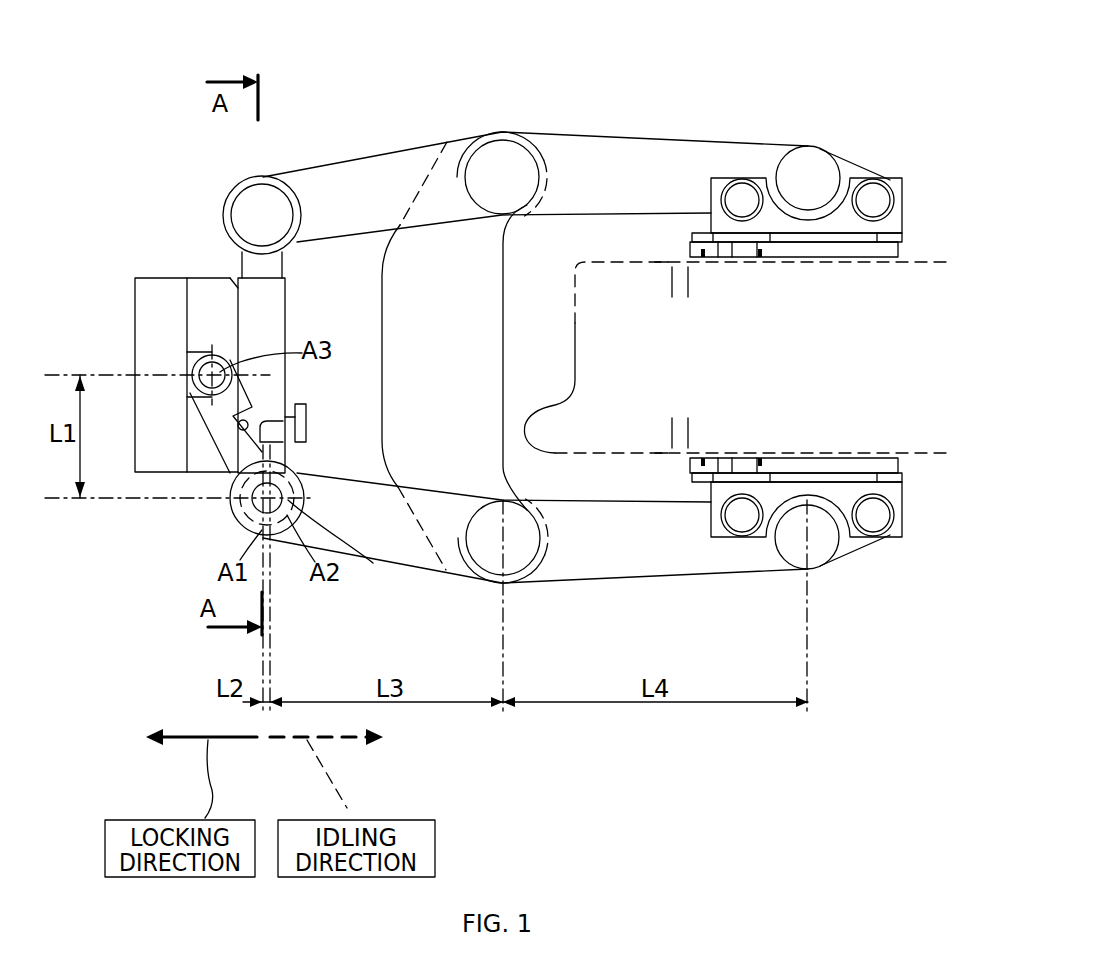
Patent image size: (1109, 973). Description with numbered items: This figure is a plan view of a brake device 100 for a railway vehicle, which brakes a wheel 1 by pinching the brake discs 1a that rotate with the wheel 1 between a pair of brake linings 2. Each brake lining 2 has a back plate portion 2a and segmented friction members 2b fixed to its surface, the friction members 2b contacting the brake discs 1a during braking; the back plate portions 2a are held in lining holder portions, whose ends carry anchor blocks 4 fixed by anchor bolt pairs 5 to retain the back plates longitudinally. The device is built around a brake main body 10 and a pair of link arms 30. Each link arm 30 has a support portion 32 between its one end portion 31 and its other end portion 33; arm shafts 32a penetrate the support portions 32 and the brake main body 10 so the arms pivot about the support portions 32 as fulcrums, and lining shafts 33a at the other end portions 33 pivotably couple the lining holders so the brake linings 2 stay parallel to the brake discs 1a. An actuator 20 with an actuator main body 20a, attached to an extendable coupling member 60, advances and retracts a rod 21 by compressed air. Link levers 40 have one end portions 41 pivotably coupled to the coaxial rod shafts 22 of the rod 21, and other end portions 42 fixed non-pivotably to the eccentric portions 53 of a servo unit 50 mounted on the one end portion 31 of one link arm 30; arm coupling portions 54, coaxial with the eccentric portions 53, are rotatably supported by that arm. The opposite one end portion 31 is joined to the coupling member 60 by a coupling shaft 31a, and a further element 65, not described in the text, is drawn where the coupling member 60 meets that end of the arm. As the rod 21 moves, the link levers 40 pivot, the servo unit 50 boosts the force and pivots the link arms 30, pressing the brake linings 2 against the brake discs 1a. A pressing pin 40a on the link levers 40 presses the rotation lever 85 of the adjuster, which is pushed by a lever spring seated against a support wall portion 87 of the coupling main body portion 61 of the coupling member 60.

The brake device 100 is at (914, 88).
The wheel 1 is at (922, 303).
The brake discs 1a is at (928, 260).
The brake linings 2 is at (857, 270).
The back plate portions 2a is at (757, 240).
The friction members 2b is at (808, 254).
The anchor blocks 4 is at (718, 178).
The anchor bolt pairs 5 is at (742, 198).
The brake main body 10 is at (487, 242).
The actuator 20 is at (165, 272).
The actuator main body 20a is at (157, 318).
The rod 21 is at (196, 315).
The rod shafts 22 is at (205, 370).
The link arms 30 is at (640, 140).
The one end portions 31 is at (263, 178).
The coupling shaft 31a is at (260, 212).
The support portions 32 is at (508, 130).
The arm shafts 32a is at (500, 178).
The other end portions 33 is at (812, 180).
The lining shafts 33a is at (815, 176).
The link levers 40 is at (222, 440).
The pressing pin 40a is at (248, 422).
The one end portions 41 is at (222, 340).
The other end portions 42 is at (240, 507).
The servo unit 50 is at (228, 522).
The eccentric portions 53 is at (340, 545).
The arm coupling portions 54 is at (288, 481).
The coupling member 60 is at (294, 290).
The coupling main body portion 61 is at (268, 320).
The actuator rod 65 is at (283, 259).
The rotation lever 85 is at (284, 419).
The support wall portion 87 is at (307, 427).